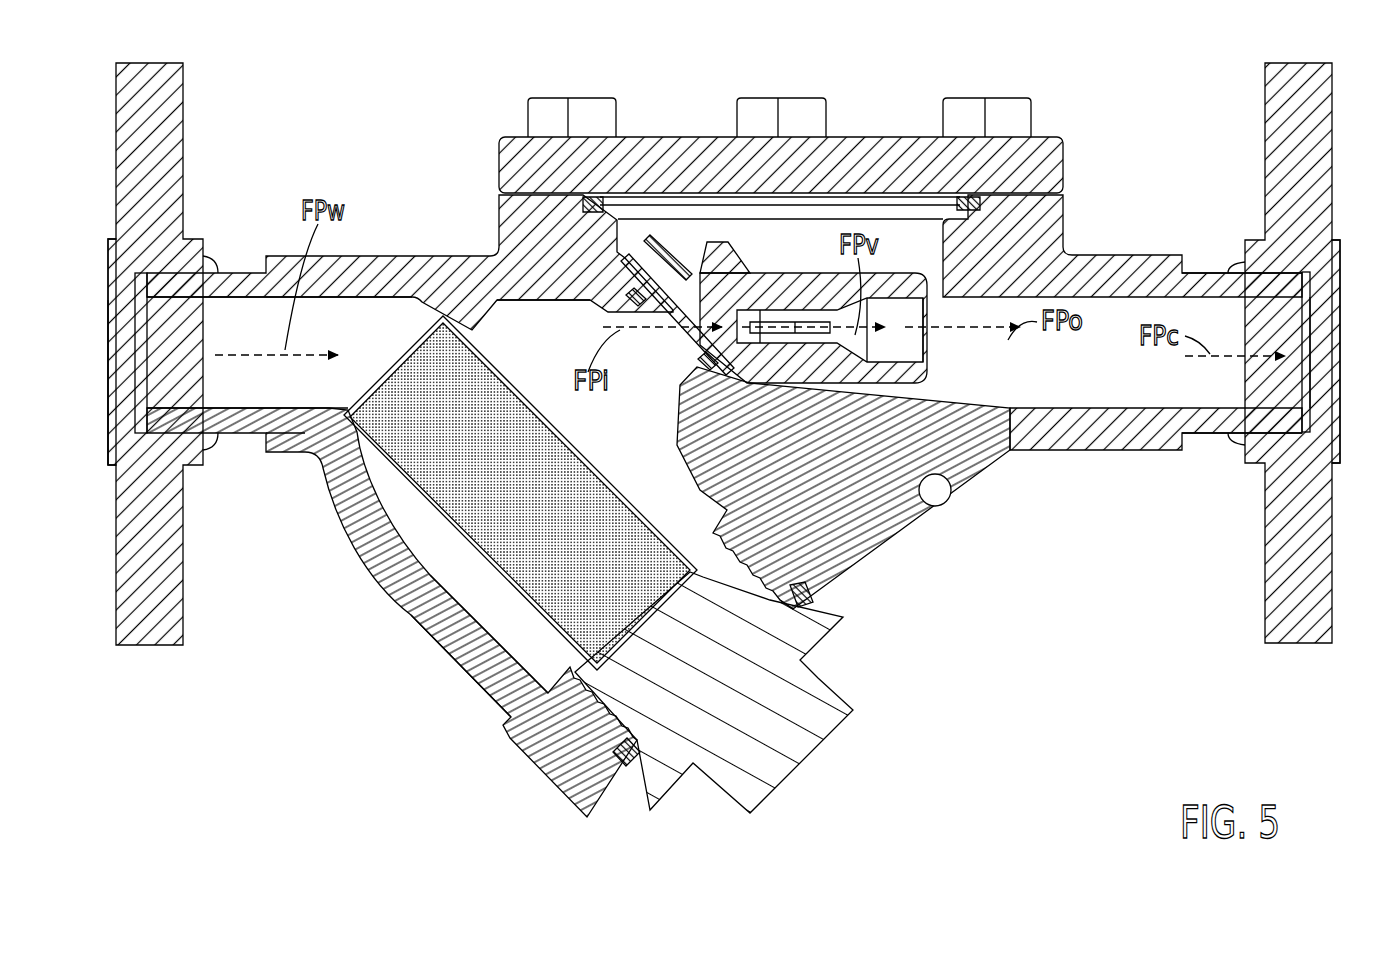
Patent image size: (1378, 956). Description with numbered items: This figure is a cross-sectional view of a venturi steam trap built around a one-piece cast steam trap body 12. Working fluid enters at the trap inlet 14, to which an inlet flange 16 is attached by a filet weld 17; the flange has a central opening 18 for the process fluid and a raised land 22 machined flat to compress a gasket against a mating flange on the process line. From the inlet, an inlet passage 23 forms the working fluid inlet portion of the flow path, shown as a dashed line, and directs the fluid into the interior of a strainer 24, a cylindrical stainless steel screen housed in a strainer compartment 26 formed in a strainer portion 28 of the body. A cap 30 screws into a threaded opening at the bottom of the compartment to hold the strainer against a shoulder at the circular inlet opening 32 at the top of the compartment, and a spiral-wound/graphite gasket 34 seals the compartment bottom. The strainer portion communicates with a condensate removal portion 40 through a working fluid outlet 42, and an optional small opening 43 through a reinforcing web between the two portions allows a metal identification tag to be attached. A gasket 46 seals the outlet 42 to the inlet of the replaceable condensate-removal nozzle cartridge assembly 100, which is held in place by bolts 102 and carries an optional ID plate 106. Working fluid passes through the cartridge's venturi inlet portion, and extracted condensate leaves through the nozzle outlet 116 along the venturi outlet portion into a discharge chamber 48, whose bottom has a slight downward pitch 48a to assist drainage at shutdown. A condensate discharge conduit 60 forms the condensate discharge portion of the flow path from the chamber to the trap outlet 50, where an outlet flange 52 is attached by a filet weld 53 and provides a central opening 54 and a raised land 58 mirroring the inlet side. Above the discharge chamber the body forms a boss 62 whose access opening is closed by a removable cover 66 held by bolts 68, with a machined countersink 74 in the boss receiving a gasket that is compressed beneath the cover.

The steam trap body 12 is at (793, 609).
The trap inlet 14 is at (168, 322).
The inlet flange 16 is at (148, 75).
The filet weld 17 is at (215, 268).
The central opening 18 is at (120, 383).
The raised land 22 is at (108, 255).
The inlet passage 23 is at (233, 395).
The strainer 24 is at (447, 518).
The strainer compartment 26 is at (397, 503).
The strainer portion 28 is at (430, 632).
The cap 30 is at (800, 750).
The circular inlet opening 32 is at (402, 340).
The spiral-wound/graphite gasket 34 is at (632, 762).
The condensate removal portion 40 is at (724, 491).
The working fluid outlet 42 is at (690, 343).
The small opening 43 is at (910, 495).
The gasket 46 is at (590, 310).
The discharge chamber 48 is at (910, 235).
The downward pitch 48a is at (925, 440).
The trap outlet 50 is at (1300, 318).
The outlet flange 52 is at (1300, 72).
The filet weld 53 is at (1232, 440).
The central opening 54 is at (1325, 352).
The raised land 58 is at (1338, 250).
The condensate discharge conduit 60 is at (1157, 393).
The boss 62 is at (510, 230).
The removable cover 66 is at (1063, 168).
The bolts 68 is at (548, 100).
The machined countersink 74 is at (967, 205).
The condensate-removal nozzle cartridge assembly 100 is at (900, 400).
The bolts 102 is at (735, 252).
The ID plate 106 is at (673, 255).
The nozzle outlet 116 is at (930, 355).